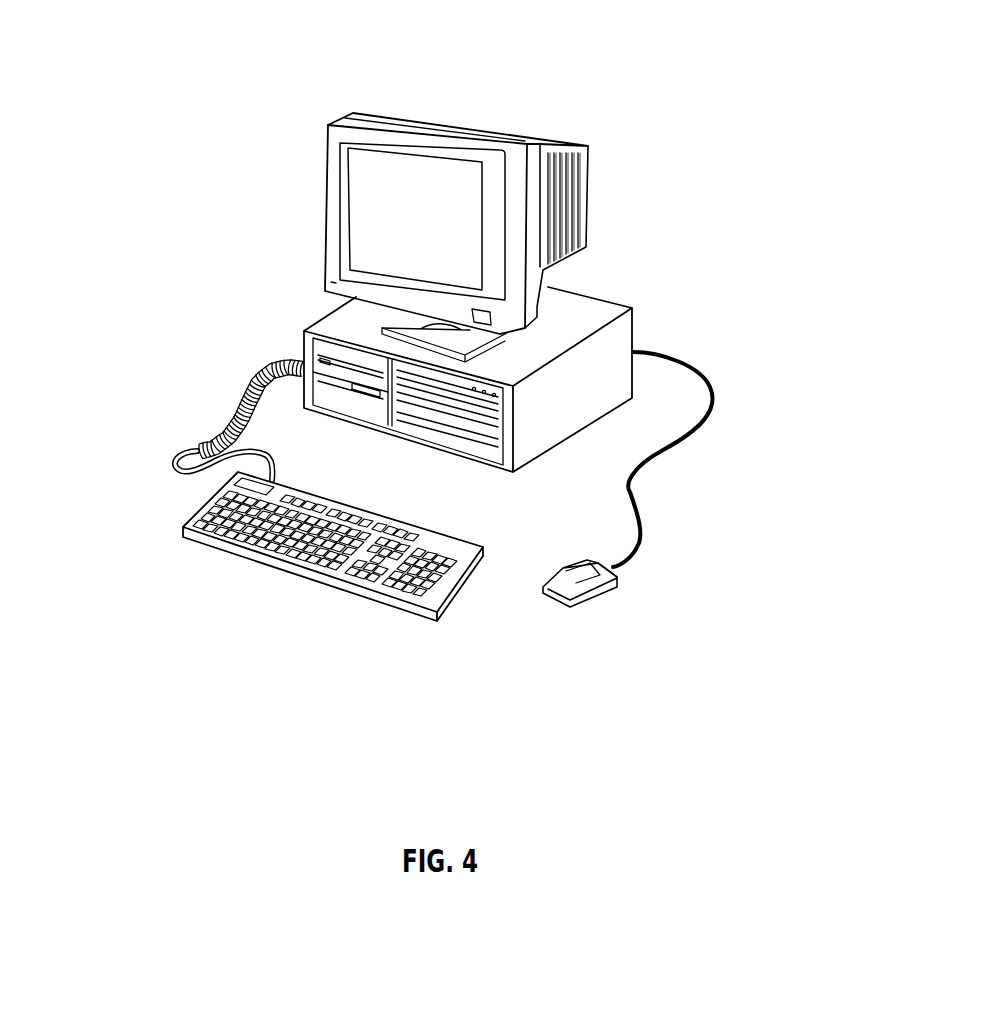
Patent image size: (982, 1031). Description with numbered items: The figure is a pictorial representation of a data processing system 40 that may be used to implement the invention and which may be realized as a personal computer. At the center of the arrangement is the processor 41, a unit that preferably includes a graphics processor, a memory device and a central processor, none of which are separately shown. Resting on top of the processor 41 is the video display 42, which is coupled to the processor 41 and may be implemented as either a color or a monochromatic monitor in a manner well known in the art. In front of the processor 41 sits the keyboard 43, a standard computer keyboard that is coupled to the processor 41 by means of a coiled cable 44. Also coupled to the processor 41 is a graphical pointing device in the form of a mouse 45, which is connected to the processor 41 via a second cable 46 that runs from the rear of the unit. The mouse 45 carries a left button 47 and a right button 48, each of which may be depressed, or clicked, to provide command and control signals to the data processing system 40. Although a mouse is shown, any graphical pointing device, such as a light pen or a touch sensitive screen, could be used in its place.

The data processing system 40 is at (480, 122).
The processor 41 is at (303, 340).
The video display 42 is at (327, 172).
The keyboard 43 is at (293, 573).
The cable 44 is at (225, 405).
The mouse 45 is at (595, 602).
The cable 46 is at (710, 382).
The left button 47 is at (582, 560).
The right button 48 is at (617, 568).